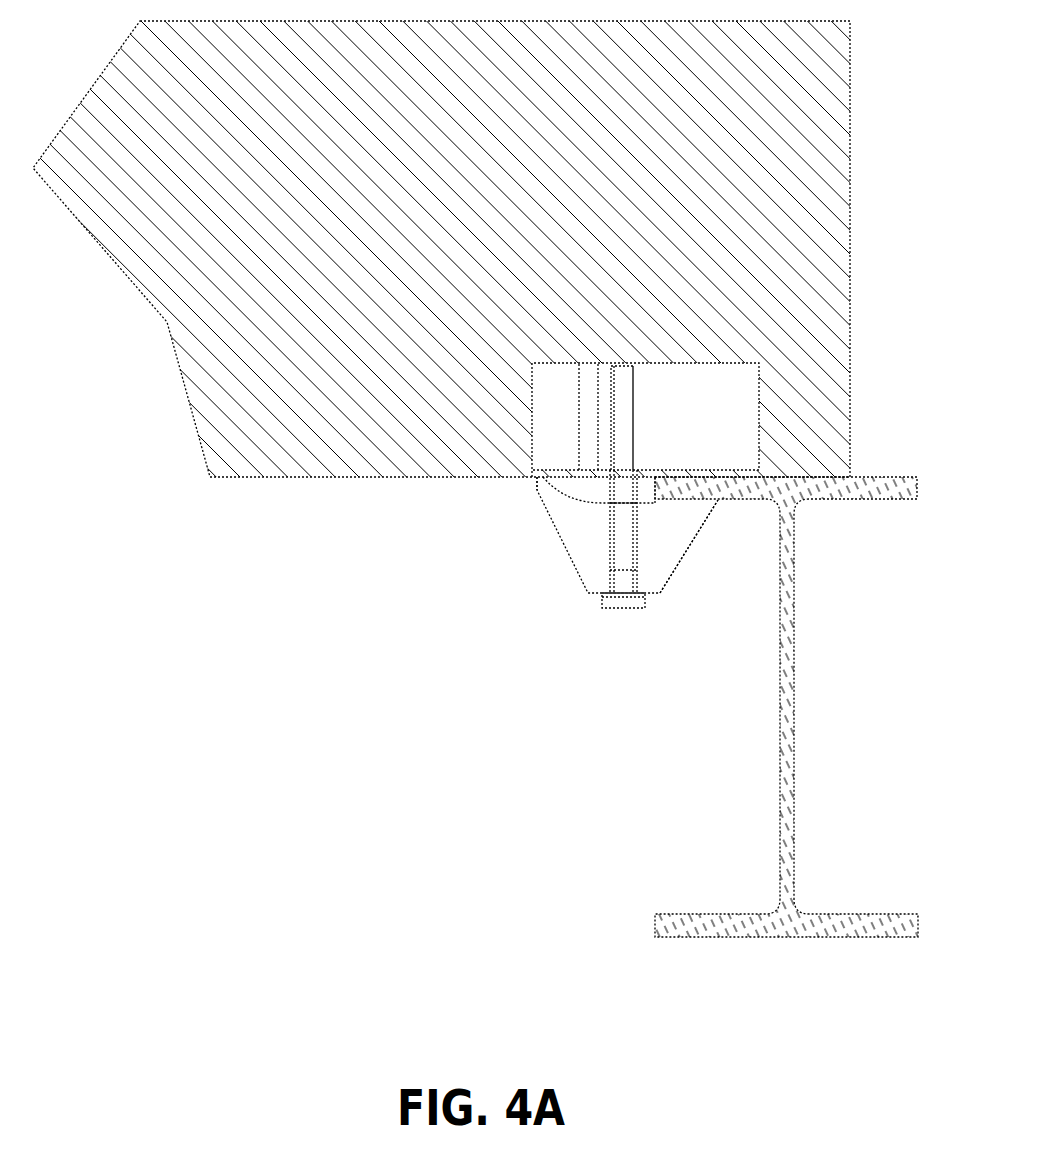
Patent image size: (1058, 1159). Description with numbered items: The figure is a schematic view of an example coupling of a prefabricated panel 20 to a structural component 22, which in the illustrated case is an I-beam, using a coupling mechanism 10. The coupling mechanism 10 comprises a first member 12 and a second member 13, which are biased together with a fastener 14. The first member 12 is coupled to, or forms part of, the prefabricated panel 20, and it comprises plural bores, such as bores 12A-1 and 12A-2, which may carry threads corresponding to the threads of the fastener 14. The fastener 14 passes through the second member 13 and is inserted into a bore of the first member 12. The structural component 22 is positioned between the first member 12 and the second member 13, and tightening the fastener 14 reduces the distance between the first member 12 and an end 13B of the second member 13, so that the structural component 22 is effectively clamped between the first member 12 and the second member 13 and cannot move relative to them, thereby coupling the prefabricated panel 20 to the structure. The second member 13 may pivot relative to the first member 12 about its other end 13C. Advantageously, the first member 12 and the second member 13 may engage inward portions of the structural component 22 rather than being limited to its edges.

The prefabricated panel 20 is at (128, 150).
The first member 12 is at (692, 430).
The bore 12A-1 is at (633, 413).
The bore 12A-2 is at (578, 413).
The fastener 14 is at (627, 598).
The second member 13 is at (583, 562).
The end of second member 13C is at (518, 495).
The end of second member 13B is at (726, 518).
The coupling mechanism 10 is at (515, 556).
The structural component 22 is at (732, 485).